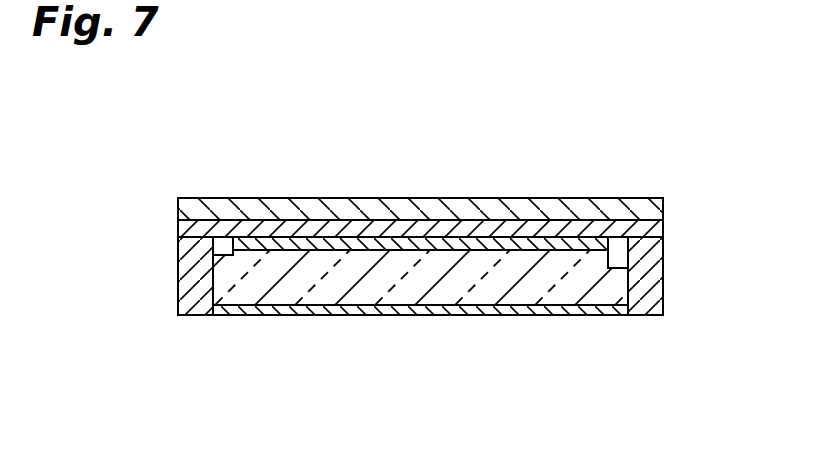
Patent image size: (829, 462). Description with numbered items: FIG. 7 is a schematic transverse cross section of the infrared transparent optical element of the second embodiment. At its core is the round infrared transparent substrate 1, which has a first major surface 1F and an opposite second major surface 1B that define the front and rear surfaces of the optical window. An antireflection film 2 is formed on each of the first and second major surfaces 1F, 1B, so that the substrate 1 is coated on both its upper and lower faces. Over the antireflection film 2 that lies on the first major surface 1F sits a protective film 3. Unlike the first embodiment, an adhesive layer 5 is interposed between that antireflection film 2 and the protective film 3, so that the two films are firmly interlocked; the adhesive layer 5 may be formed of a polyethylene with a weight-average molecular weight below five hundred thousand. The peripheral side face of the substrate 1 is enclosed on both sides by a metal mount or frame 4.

The infrared transparent substrate 1 is at (291, 276).
The first major surface 1F is at (240, 253).
The second major surface 1B is at (262, 297).
The antireflection film 2 is at (294, 237).
The protective film 3 is at (536, 209).
The metal mount or frame 4 is at (192, 284).
The adhesive layer 5 is at (418, 230).